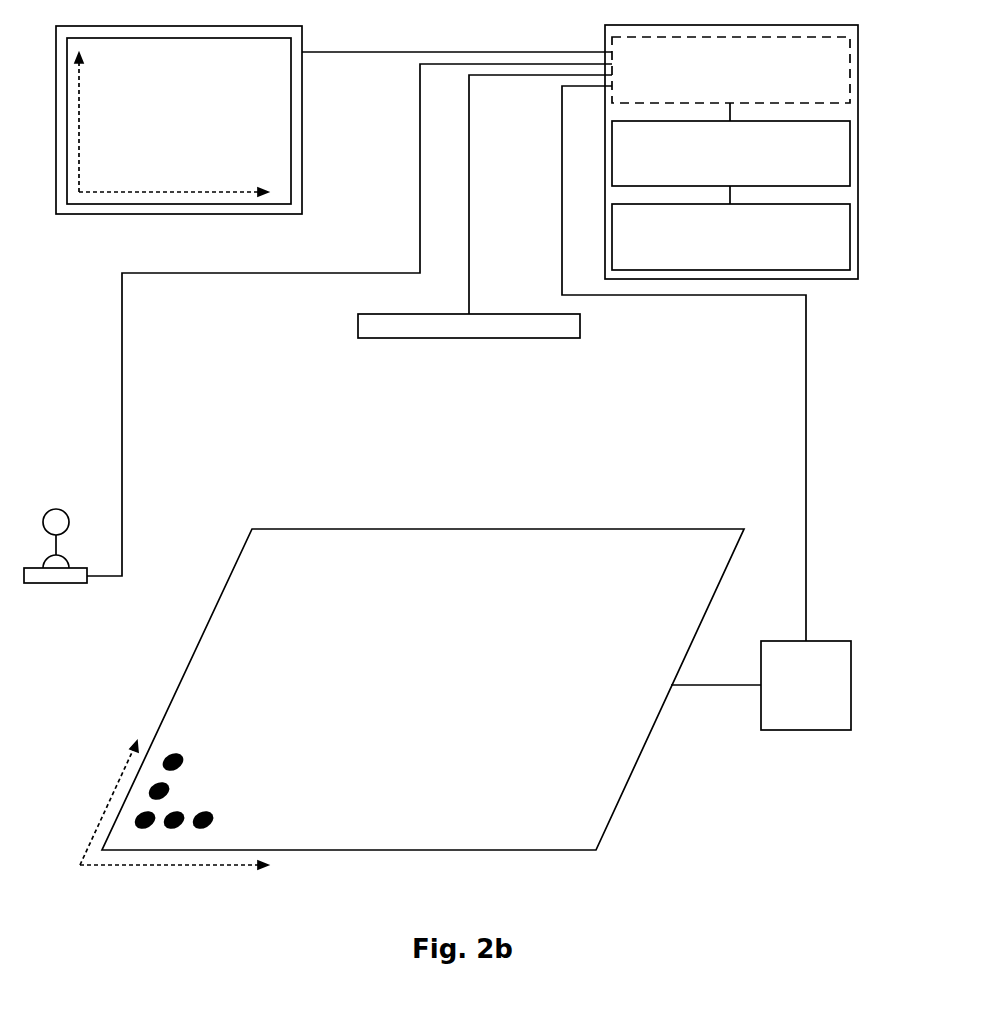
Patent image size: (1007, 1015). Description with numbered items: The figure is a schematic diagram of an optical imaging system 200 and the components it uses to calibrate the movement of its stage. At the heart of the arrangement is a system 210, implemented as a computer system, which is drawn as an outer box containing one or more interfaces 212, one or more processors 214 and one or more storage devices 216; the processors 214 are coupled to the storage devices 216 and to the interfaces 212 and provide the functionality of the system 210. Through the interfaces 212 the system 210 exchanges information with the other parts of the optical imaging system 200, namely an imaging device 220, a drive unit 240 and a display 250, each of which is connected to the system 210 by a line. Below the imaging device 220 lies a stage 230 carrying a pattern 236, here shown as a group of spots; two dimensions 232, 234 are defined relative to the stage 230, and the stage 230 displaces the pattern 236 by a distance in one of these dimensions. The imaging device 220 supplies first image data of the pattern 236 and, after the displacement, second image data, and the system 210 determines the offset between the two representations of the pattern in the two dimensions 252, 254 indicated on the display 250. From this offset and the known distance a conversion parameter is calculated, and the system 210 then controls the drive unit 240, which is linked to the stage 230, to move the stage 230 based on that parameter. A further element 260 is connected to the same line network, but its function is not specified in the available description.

The optical imaging system 200 is at (847, 850).
The system 210 is at (858, 280).
The interfaces 212 is at (850, 70).
The processors 214 is at (850, 152).
The storage devices 216 is at (850, 237).
The imaging device 220 is at (545, 338).
The stage 230 is at (622, 793).
The dimension 232 is at (187, 867).
The dimension 234 is at (106, 803).
The pattern 236 is at (184, 765).
The drive unit 240 is at (808, 731).
The display 250 is at (302, 205).
The dimension 252 is at (230, 192).
The dimension 254 is at (80, 72).
The joystick input device 260 is at (55, 584).